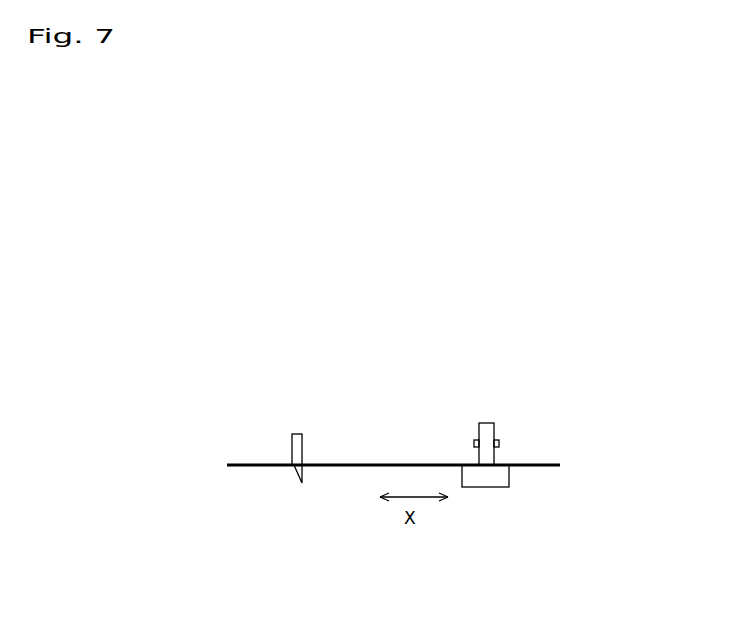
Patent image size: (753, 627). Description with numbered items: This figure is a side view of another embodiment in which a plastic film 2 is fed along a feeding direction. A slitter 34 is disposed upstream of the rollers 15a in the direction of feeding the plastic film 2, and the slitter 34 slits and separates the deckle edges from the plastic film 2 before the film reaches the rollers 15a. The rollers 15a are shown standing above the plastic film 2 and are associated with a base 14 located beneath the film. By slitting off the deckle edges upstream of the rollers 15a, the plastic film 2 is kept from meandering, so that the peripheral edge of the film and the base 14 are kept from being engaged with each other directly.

The plastic film 2 is at (397, 464).
The slitter 34 is at (291, 440).
The roller 15a is at (488, 430).
The base 14 is at (493, 477).